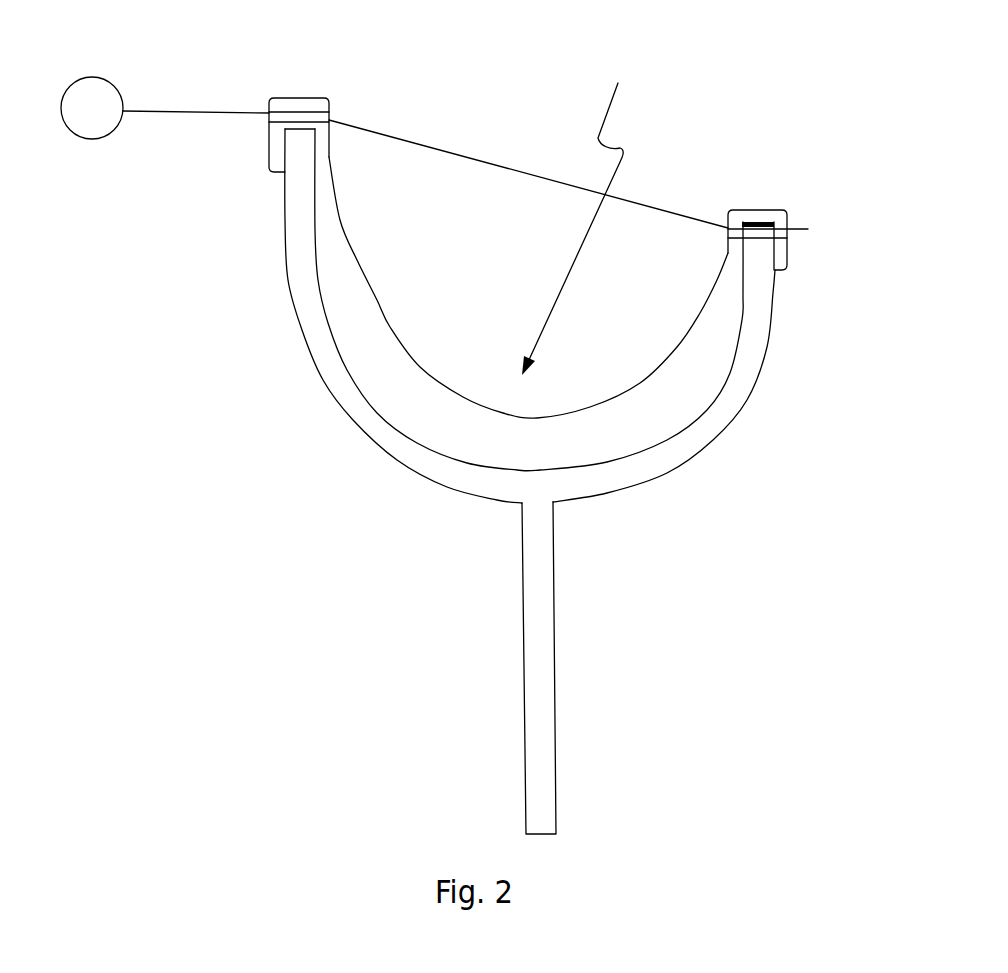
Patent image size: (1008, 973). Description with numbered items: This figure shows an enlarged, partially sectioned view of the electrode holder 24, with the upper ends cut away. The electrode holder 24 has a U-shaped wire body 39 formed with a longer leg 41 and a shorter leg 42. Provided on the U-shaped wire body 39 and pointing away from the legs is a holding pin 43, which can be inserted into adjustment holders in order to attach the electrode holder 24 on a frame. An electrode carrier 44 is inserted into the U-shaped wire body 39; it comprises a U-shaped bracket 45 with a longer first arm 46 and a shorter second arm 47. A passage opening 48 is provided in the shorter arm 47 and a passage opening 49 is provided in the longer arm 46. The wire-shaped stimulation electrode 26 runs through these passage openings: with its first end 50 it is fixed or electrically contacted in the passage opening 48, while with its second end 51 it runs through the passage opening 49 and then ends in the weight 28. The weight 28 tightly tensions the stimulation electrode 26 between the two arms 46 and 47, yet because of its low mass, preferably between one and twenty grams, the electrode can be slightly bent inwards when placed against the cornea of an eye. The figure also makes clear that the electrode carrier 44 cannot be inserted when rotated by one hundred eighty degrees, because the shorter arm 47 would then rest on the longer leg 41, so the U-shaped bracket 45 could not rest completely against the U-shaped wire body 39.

The electrode holder 24 is at (541, 481).
The stimulation electrode 26 is at (448, 152).
The weight 28 is at (82, 112).
The U-shaped wire body 39 is at (448, 475).
The longer leg 41 is at (298, 242).
The shorter leg 42 is at (753, 310).
The holding pin 43 is at (540, 630).
The electrode carrier 44 is at (577, 215).
The U-shaped bracket 45 is at (510, 454).
The longer first arm 46 is at (333, 275).
The shorter second arm 47 is at (707, 323).
The passage opening 48 is at (787, 222).
The passage opening 49 is at (315, 110).
The first end 50 is at (727, 229).
The second end 51 is at (220, 112).